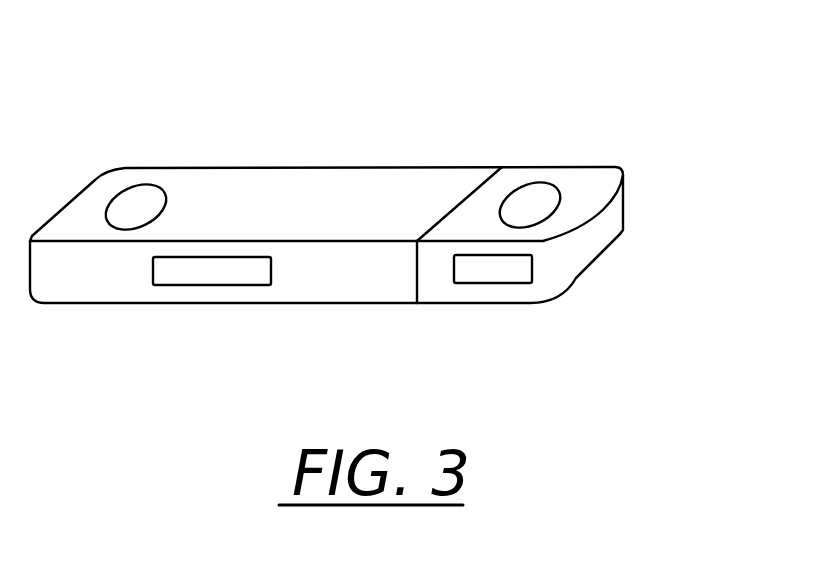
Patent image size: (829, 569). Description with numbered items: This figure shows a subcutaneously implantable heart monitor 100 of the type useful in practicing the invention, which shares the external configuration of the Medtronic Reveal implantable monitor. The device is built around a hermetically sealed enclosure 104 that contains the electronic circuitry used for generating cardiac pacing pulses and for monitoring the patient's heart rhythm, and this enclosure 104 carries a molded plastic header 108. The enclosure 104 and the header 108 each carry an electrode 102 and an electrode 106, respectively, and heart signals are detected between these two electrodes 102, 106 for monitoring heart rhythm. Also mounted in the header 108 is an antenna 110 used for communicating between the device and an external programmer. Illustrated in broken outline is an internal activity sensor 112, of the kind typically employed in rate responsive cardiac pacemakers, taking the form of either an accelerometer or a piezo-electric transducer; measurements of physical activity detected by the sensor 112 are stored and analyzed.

The subcutaneously implantable heart monitor 100 is at (390, 207).
The electrode 102 is at (135, 210).
The hermetically sealed enclosure 104 is at (428, 182).
The electrode 106 is at (538, 197).
The molded plastic header 108 is at (603, 227).
The antenna 110 is at (490, 267).
The internal activity sensor 112 is at (208, 283).